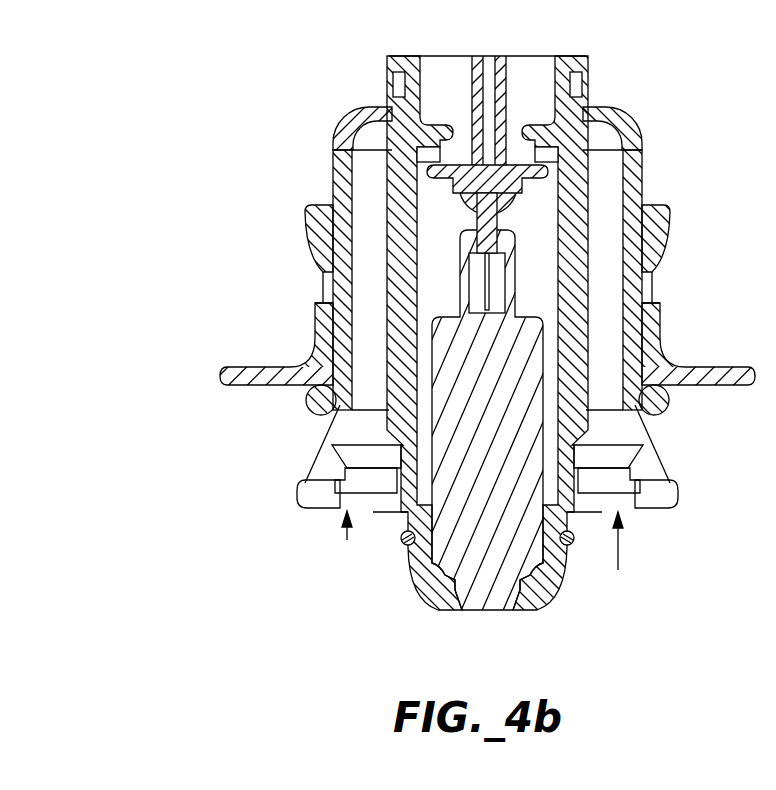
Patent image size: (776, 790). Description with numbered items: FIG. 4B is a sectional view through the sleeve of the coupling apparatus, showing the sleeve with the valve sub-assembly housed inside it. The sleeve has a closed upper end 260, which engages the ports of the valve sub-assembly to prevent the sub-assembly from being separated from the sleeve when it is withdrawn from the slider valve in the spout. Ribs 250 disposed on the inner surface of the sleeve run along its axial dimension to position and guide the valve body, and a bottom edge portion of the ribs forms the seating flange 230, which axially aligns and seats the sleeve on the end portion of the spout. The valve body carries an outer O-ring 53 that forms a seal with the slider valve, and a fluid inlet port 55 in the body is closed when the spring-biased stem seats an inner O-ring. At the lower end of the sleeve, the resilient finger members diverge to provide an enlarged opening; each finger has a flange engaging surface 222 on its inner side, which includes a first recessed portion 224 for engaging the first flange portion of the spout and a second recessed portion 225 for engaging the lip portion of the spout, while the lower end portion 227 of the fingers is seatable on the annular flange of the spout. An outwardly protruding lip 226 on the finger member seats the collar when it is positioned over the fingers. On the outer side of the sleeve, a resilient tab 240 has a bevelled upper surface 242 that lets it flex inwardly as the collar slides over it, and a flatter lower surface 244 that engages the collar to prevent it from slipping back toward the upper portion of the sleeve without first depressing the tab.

The outer O-ring 53 is at (404, 540).
The fluid inlet port 55 is at (498, 613).
The flange engaging surface 222 is at (347, 540).
The first recessed portion 224 is at (397, 513).
The second recessed portion 225 is at (335, 455).
The outwardly protruding lip 226 is at (300, 481).
The lower end portion 227 is at (653, 503).
The seating flange 230 is at (350, 457).
The resilient tab 240 is at (305, 410).
The bevelled upper surface 242 is at (298, 367).
The flatter lower surface 244 is at (335, 412).
The ribs 250 is at (357, 177).
The closed upper end 260 is at (613, 108).